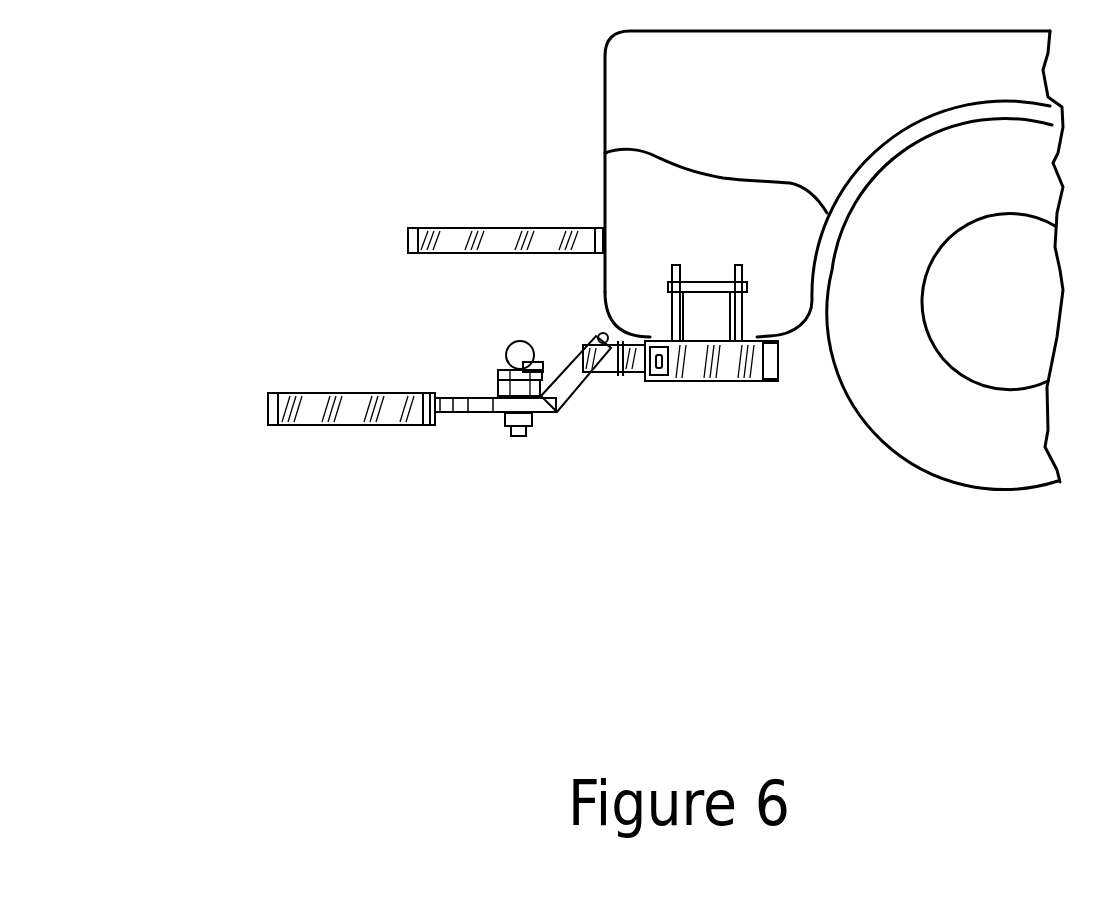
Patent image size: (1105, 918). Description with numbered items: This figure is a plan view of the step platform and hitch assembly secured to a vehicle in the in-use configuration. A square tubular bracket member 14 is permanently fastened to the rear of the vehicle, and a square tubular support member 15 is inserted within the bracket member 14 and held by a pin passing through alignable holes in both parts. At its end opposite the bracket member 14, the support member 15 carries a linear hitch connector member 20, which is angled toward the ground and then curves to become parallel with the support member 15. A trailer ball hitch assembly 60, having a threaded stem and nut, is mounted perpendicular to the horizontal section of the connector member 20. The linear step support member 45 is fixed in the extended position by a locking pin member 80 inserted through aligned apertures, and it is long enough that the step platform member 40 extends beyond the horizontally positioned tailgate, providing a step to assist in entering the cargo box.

The square tubular bracket member 14 is at (722, 381).
The square tubular support member 15 is at (618, 376).
The hitch connector member 20 is at (580, 353).
The step platform member 40 is at (268, 405).
The linear step support member 45 is at (462, 412).
The trailer ball hitch assembly 60 is at (503, 360).
The locking pin member 80 is at (523, 430).